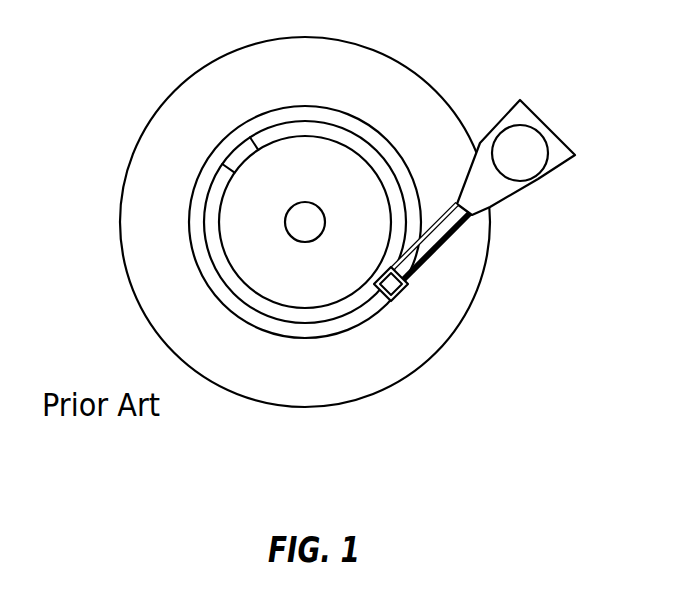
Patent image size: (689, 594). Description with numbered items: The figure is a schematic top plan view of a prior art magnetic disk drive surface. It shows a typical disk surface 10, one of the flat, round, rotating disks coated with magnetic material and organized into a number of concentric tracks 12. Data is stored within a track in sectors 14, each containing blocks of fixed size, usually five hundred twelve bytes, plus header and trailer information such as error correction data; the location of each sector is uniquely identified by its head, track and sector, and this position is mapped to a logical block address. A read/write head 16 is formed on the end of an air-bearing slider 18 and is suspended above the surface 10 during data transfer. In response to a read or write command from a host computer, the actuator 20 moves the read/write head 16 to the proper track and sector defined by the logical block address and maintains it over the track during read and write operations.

The disk surface 10 is at (125, 186).
The concentric tracks 12 is at (278, 322).
The sectors 14 is at (242, 157).
The read/write head 16 is at (400, 298).
The air-bearing slider 18 is at (438, 250).
The actuator 20 is at (542, 180).